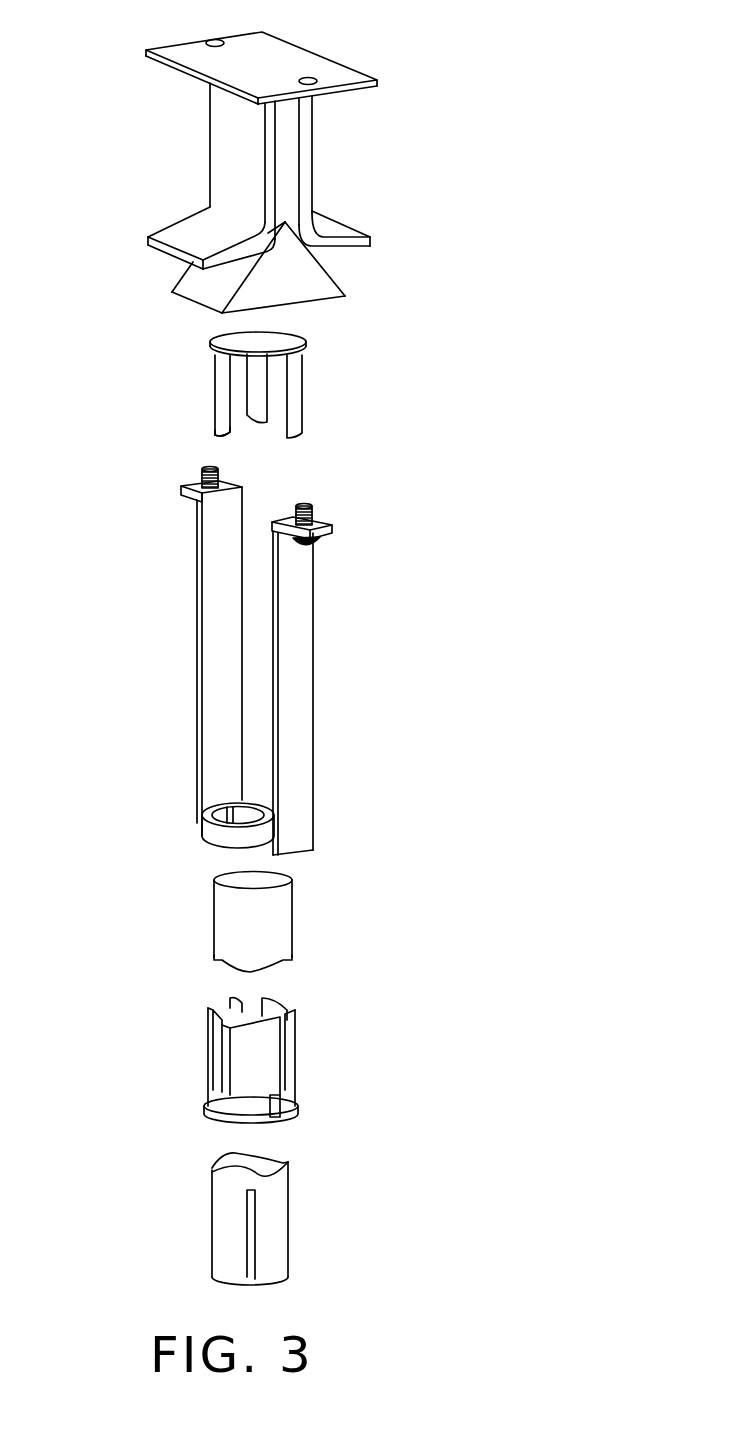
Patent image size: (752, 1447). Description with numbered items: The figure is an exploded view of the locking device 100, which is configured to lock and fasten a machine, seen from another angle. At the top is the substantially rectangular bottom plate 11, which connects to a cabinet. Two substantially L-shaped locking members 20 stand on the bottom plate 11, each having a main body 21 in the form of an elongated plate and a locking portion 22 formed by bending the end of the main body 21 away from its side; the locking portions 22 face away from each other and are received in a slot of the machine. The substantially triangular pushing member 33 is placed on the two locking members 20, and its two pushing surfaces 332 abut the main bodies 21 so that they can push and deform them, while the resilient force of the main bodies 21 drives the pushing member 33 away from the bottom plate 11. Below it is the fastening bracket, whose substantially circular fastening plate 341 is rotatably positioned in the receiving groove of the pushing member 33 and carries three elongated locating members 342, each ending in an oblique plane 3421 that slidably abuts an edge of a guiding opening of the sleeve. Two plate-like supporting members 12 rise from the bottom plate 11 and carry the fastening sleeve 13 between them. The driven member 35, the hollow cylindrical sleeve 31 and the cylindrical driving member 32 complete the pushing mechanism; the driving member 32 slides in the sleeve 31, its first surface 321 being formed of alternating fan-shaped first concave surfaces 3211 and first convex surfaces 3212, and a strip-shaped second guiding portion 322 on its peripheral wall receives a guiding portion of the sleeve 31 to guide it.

The locking device 100 is at (95, 29).
The bottom plate 11 is at (338, 72).
The locking member 20 is at (220, 155).
The main body 21 is at (305, 165).
The locking portion 22 is at (337, 228).
The pushing member 33 is at (245, 267).
The pushing surface 332 is at (197, 287).
The fastening plate 341 is at (283, 342).
The locating member 342 is at (222, 402).
The oblique plane 3421 is at (222, 435).
The supporting member 12 is at (222, 637).
The fastening sleeve 13 is at (210, 832).
The driven member 35 is at (280, 925).
The sleeve 31 is at (288, 1098).
The driving member 32 is at (214, 1204).
The first surface 321 is at (174, 1158).
The first concave surface 3211 is at (237, 1169).
The first convex surface 3212 is at (283, 1163).
The second guiding portion 322 is at (254, 1245).